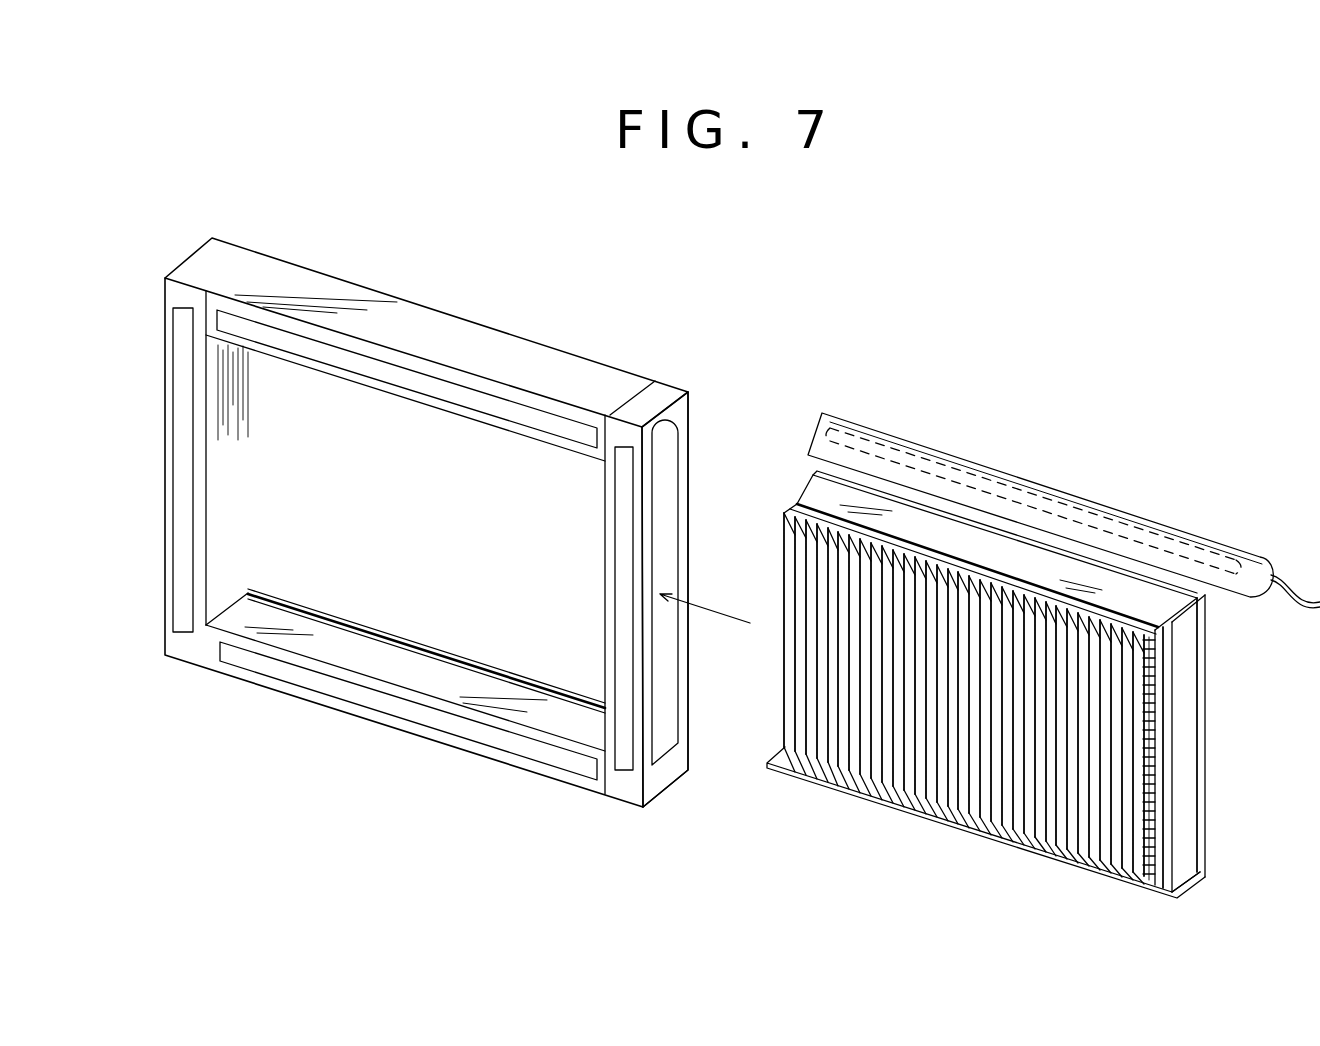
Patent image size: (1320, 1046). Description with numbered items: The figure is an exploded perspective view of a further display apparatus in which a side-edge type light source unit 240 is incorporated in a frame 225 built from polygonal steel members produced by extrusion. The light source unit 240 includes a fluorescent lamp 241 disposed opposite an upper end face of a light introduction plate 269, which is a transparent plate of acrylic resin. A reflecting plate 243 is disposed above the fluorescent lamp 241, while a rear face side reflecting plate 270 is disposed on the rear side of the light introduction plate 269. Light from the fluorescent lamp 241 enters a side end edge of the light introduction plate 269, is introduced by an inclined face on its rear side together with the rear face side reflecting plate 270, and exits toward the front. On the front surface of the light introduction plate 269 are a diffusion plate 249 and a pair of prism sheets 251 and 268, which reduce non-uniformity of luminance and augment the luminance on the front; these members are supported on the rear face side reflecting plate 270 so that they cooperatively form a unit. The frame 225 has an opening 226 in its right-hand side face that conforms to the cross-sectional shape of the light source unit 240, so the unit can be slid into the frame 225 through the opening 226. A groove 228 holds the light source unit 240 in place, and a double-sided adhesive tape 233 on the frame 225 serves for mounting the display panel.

The frame 225 is at (453, 324).
The opening 226 is at (657, 533).
The groove 228 is at (397, 667).
The double-sided adhesive tape 233 is at (432, 390).
The side-edge type light source unit 240 is at (857, 831).
The fluorescent lamp 241 is at (1094, 520).
The reflecting plate 243 is at (969, 458).
The diffusion plate 249 is at (1160, 722).
The prism sheet 251 is at (1152, 778).
The prism sheet 268 is at (1045, 848).
The light introduction plate 269 is at (1185, 668).
The rear face side reflecting plate 270 is at (1208, 838).